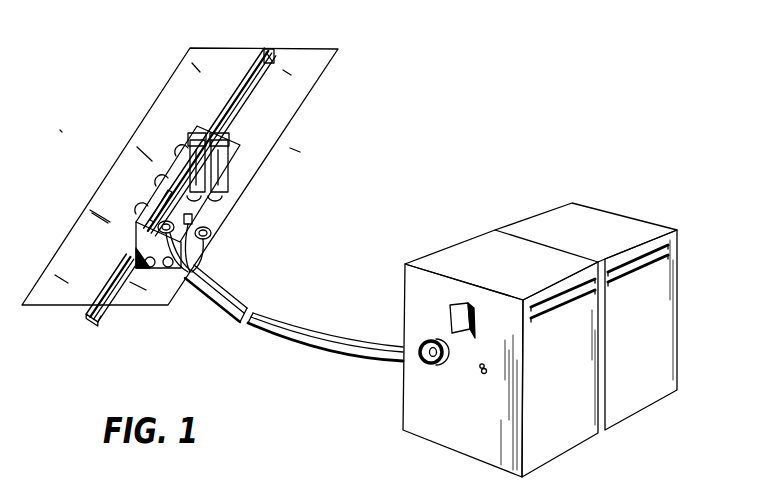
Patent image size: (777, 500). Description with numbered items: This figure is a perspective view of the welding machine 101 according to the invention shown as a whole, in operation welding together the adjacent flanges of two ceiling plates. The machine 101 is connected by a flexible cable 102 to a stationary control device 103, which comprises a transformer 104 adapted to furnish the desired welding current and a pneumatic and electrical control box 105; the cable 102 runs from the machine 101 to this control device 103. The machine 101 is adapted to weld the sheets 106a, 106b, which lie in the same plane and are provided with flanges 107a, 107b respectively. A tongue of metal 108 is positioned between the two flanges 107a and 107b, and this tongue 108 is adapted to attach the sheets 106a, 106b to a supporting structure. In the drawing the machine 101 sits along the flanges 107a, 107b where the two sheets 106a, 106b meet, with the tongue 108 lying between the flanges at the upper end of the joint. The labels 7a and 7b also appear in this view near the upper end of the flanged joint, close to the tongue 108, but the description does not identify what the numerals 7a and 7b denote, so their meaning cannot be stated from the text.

The rail section 7a is at (253, 67).
The rail section 7b is at (273, 55).
The welding machine 101 is at (180, 176).
The flexible cable 102 is at (303, 340).
The stationary control device 103 is at (540, 327).
The transformer 104 is at (572, 430).
The pneumatic and electrical control box 105 is at (637, 398).
The sheet 106a is at (168, 108).
The sheet 106b is at (310, 77).
The flange 107a is at (93, 280).
The flange 107b is at (93, 280).
The tongue of metal 108 is at (268, 49).